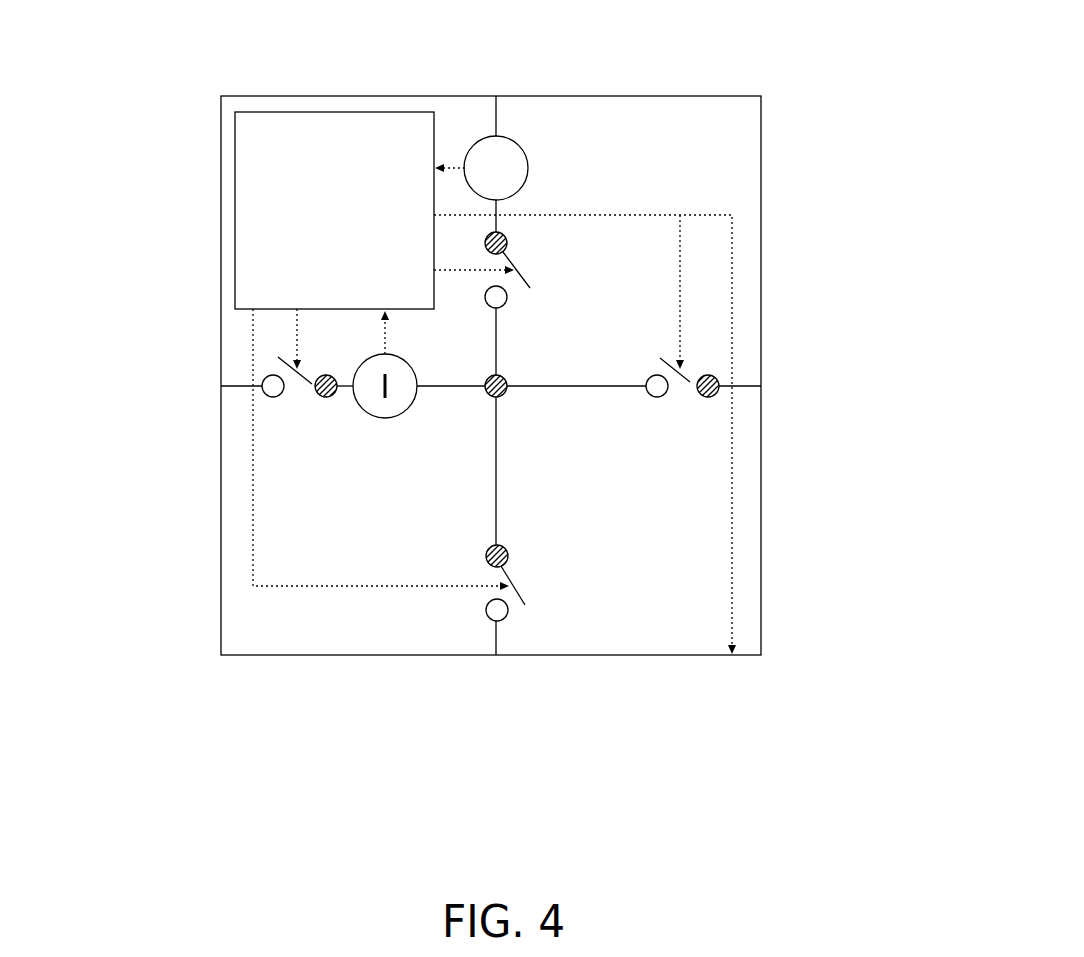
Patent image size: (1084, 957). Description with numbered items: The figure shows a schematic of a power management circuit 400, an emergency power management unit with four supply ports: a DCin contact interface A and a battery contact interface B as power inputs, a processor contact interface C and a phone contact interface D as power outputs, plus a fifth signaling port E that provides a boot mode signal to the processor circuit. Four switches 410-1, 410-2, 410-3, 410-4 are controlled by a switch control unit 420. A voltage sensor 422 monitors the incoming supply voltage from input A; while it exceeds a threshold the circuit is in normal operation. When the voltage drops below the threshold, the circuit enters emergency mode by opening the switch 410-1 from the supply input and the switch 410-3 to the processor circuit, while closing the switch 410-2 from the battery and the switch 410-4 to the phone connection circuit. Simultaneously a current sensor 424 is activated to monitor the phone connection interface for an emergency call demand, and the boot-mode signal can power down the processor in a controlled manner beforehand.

The power management circuit 400 is at (230, 27).
The switch control unit 420 is at (334, 210).
The voltage sensor 422 is at (528, 166).
The current sensor 424 is at (395, 405).
The switch 410-1 is at (527, 280).
The switch 410-2 is at (686, 382).
The switch 410-3 is at (518, 592).
The switch 410-4 is at (310, 384).